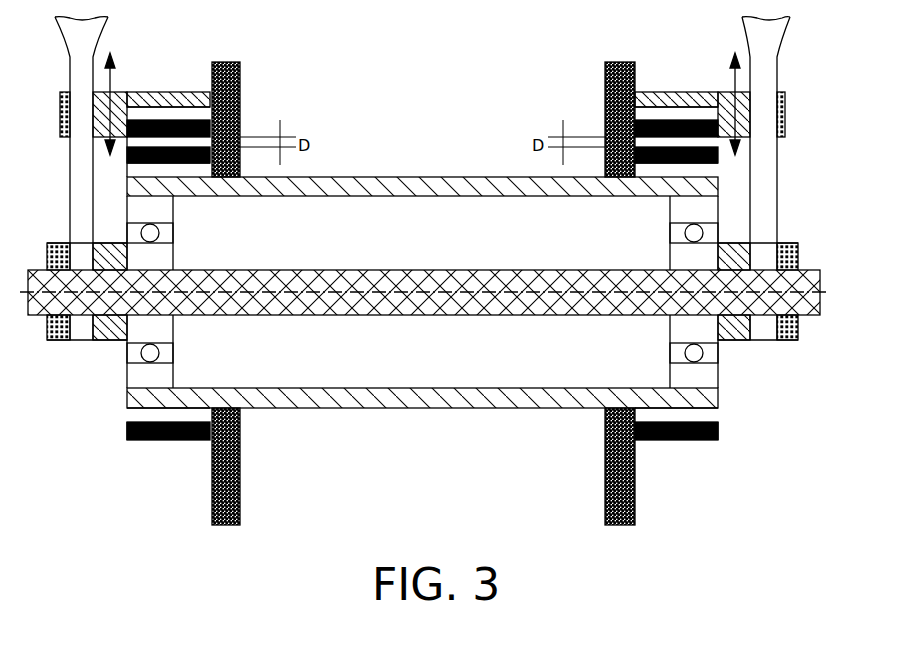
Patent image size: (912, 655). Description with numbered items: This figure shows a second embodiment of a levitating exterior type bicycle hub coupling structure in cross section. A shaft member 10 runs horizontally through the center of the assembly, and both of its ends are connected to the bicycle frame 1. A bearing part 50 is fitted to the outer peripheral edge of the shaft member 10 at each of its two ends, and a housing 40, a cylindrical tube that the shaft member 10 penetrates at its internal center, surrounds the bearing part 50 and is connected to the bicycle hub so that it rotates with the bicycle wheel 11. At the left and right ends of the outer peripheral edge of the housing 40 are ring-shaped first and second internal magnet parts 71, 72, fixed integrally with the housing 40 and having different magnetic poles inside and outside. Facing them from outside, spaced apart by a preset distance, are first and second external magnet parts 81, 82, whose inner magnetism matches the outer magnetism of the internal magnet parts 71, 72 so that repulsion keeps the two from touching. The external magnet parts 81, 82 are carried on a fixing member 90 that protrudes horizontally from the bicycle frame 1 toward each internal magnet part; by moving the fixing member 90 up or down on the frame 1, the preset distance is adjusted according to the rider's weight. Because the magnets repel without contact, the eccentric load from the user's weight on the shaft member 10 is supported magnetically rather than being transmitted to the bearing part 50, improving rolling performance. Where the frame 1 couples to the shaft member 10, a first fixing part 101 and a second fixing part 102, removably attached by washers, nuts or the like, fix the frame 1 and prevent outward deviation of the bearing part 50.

The bicycle frame 1 is at (473, 272).
The shaft member 10 is at (820, 274).
The bicycle wheel 11 is at (240, 73).
The housing 40 is at (377, 177).
The bearing part 50 is at (718, 378).
The first internal magnet part 71 is at (92, 163).
The second internal magnet part 72 is at (722, 165).
The first external magnet part 81 is at (166, 92).
The second external magnet part 82 is at (760, 117).
The fixing member 90 is at (690, 92).
The first fixing part 101 is at (103, 343).
The second fixing part 102 is at (48, 343).